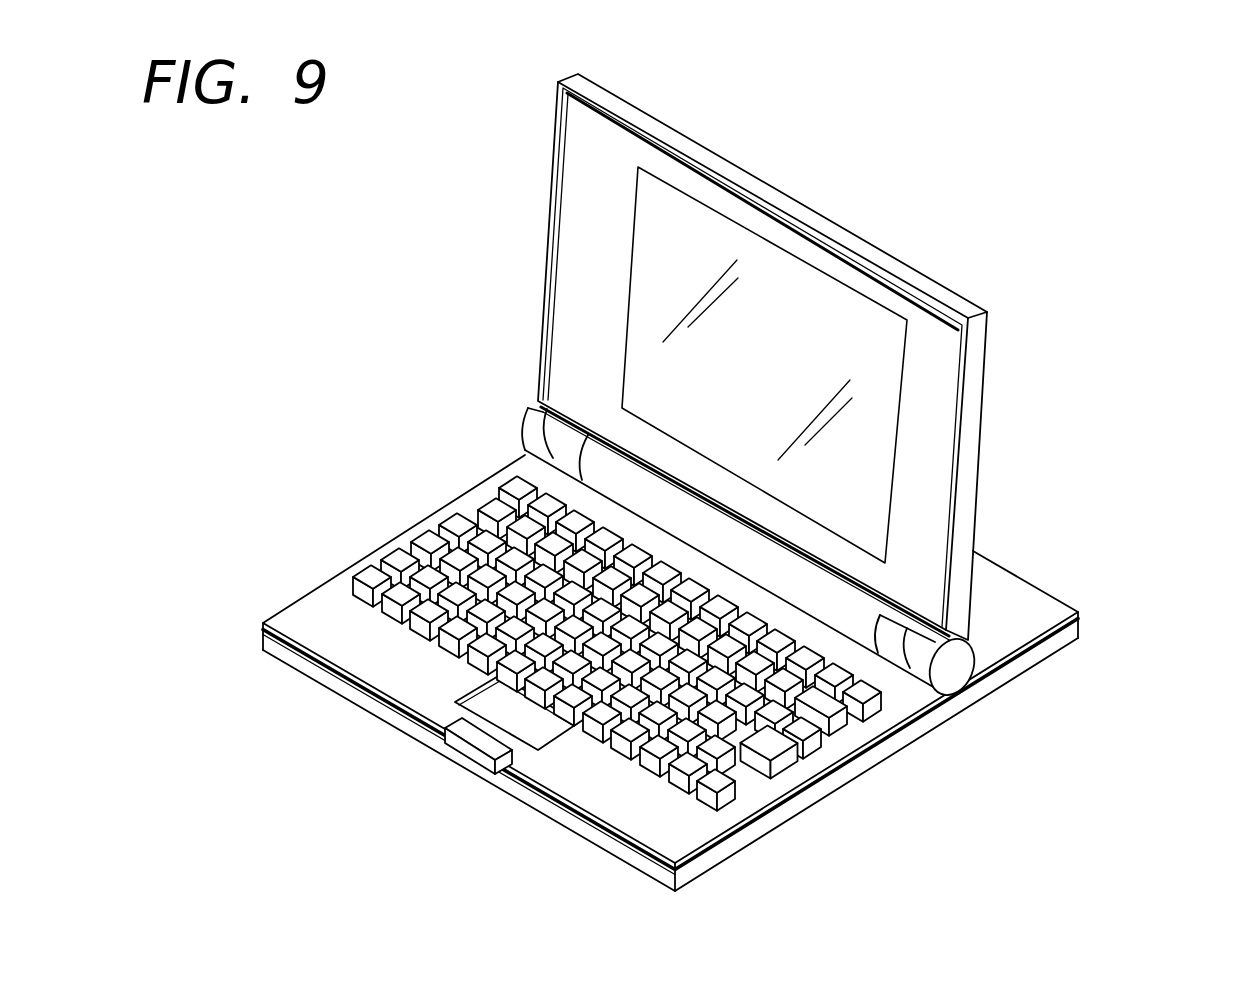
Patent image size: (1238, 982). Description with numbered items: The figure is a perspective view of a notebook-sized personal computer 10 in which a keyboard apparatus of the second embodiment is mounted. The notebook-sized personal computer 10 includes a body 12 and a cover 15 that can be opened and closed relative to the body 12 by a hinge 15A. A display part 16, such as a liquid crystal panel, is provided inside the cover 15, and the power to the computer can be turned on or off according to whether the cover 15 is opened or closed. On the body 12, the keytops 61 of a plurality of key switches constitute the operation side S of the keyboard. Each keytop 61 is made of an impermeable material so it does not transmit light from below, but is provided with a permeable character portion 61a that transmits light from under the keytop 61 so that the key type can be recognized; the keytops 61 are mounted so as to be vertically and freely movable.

The notebook-sized personal computer 10 is at (729, 493).
The body 12 is at (738, 845).
The cover 15 is at (828, 357).
The hinge 15A is at (956, 672).
The display part 16 is at (808, 325).
The keytops 61 is at (655, 631).
The permeable character portion 61a is at (493, 503).
The operation side S is at (655, 582).